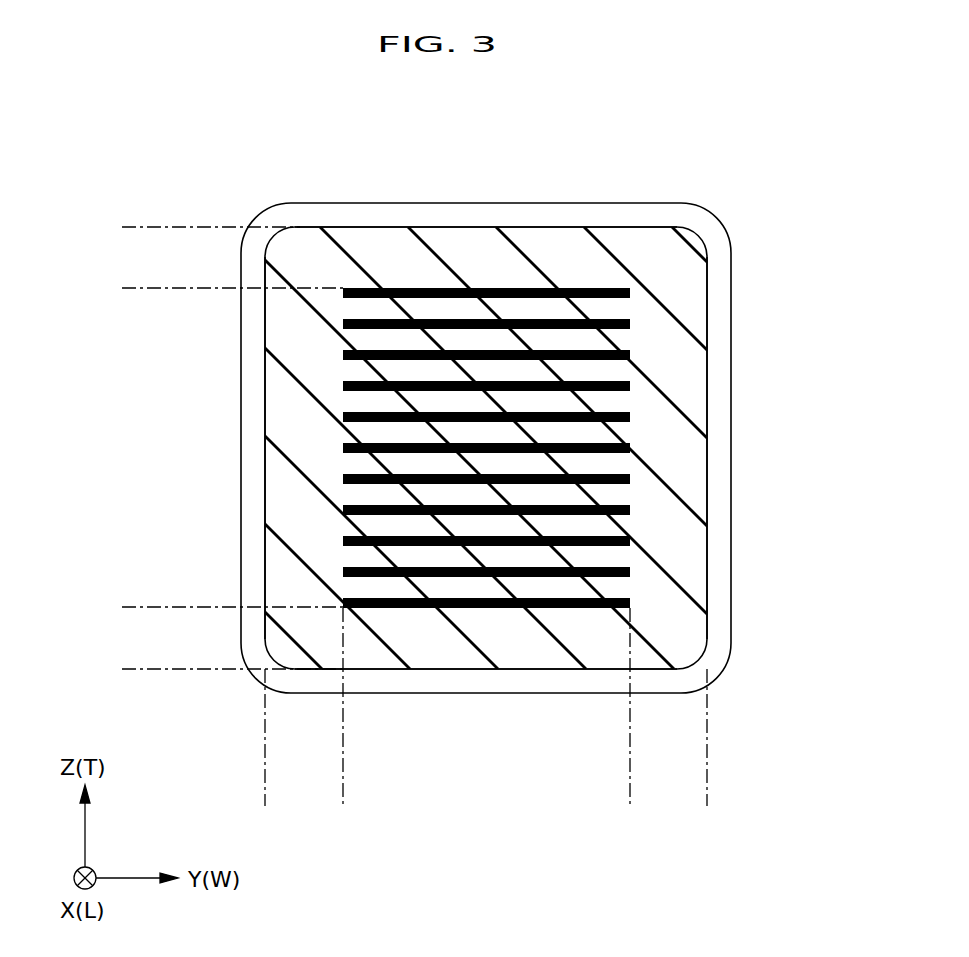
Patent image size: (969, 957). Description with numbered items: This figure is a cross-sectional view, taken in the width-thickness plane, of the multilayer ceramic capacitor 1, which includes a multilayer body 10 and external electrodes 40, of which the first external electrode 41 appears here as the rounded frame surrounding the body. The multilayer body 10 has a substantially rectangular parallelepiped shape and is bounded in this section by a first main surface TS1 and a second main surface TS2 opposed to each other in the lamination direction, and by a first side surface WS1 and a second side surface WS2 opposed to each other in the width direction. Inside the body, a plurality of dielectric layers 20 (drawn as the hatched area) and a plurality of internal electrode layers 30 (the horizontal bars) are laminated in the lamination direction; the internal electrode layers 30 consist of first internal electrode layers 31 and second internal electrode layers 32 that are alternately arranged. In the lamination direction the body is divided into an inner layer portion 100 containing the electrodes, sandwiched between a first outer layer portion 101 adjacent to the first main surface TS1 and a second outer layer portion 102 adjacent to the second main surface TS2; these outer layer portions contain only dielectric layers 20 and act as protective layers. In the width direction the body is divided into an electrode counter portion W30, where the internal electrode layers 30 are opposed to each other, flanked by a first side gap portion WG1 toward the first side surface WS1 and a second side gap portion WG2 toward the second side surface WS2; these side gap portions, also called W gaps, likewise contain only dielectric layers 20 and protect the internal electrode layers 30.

The multilayer ceramic capacitor 1 is at (690, 142).
The multilayer body 10 is at (614, 227).
The dielectric layers 20 is at (440, 650).
The internal electrode layers 30 is at (486, 355).
The first internal electrode layers 31 is at (375, 287).
The second internal electrode layers 32 is at (433, 318).
The external electrodes 40 is at (557, 448).
The first external electrode 41 is at (718, 402).
The inner layer portion 100 is at (120, 288).
The first outer layer portion 101 is at (120, 228).
The second outer layer portion 102 is at (120, 608).
The first main surface TS1 is at (543, 227).
The second main surface TS2 is at (372, 671).
The first side surface WS1 is at (265, 470).
The second side surface WS2 is at (706, 470).
The first side gap portion WG1 is at (343, 806).
The electrode counter portion W30 is at (630, 806).
The second side gap portion WG2 is at (707, 806).